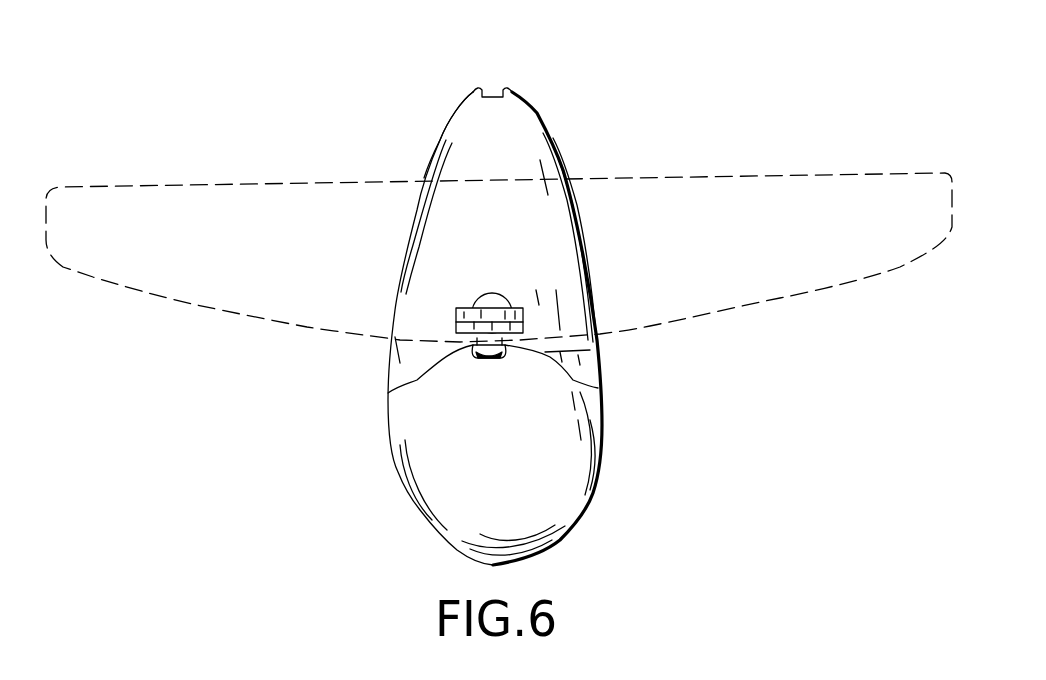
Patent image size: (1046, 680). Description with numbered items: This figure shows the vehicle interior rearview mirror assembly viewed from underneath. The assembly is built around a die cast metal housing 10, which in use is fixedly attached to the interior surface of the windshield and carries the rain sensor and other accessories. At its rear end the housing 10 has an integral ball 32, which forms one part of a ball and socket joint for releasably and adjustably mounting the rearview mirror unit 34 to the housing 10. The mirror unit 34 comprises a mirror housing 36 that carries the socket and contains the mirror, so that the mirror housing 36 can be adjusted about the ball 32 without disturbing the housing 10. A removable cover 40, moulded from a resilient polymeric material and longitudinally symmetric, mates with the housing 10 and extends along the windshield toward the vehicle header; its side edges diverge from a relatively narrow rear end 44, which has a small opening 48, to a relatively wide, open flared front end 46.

The housing 10 is at (415, 453).
The ball 32 is at (493, 294).
The rearview mirror unit 34 is at (803, 170).
The mirror housing 36 is at (456, 312).
The removable cover 40 is at (525, 147).
The narrow rear end 44 is at (452, 112).
The flared front end 46 is at (590, 350).
The small opening 48 is at (491, 96).